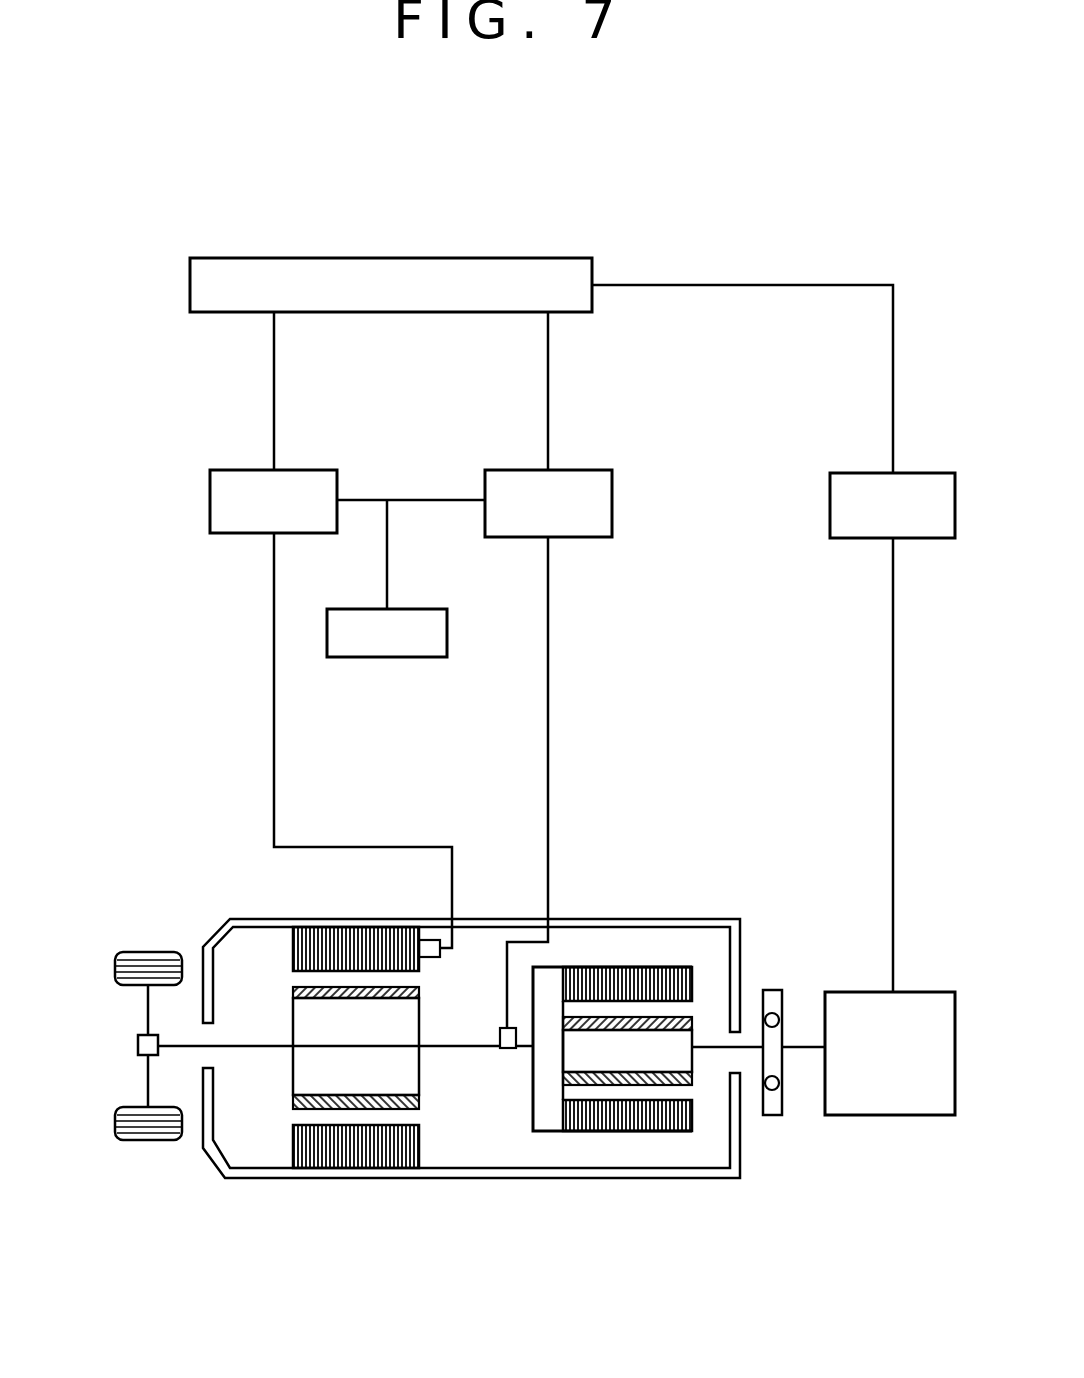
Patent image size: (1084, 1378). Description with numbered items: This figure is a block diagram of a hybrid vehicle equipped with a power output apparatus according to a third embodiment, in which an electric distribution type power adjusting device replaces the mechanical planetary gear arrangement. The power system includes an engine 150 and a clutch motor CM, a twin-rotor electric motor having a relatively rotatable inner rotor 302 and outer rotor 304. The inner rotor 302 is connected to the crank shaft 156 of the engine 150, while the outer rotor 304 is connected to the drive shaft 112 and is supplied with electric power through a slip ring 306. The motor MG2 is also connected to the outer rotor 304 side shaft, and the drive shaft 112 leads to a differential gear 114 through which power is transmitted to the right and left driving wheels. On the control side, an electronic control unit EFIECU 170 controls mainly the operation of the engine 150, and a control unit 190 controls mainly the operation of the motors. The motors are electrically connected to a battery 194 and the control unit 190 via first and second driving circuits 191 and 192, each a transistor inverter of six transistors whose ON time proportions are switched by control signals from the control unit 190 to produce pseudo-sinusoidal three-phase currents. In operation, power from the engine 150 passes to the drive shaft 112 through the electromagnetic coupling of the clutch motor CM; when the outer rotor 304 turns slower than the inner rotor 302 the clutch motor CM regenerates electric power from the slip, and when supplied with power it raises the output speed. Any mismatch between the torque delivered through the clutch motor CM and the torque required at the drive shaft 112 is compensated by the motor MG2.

The control unit 190 is at (470, 258).
The first driving circuit 191 is at (310, 470).
The second driving circuit 192 is at (612, 487).
The battery 194 is at (400, 657).
The electronic control unit (EFIECU) 170 is at (865, 473).
The engine 150 is at (862, 992).
The crank shaft 156 is at (792, 1052).
The differential gear 114 is at (138, 1048).
The drive shaft 112 is at (253, 1050).
The slip ring 306 is at (507, 1050).
The outer rotor 304 is at (548, 1131).
The inner rotor 302 is at (690, 1073).
The motor MG2 is at (295, 908).
The clutch motor CM is at (628, 1030).